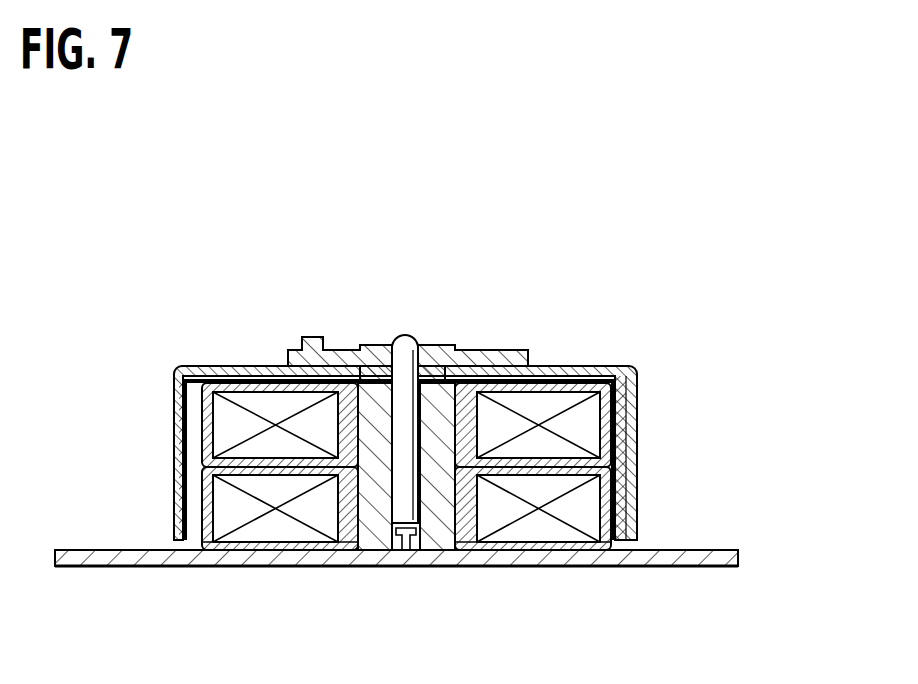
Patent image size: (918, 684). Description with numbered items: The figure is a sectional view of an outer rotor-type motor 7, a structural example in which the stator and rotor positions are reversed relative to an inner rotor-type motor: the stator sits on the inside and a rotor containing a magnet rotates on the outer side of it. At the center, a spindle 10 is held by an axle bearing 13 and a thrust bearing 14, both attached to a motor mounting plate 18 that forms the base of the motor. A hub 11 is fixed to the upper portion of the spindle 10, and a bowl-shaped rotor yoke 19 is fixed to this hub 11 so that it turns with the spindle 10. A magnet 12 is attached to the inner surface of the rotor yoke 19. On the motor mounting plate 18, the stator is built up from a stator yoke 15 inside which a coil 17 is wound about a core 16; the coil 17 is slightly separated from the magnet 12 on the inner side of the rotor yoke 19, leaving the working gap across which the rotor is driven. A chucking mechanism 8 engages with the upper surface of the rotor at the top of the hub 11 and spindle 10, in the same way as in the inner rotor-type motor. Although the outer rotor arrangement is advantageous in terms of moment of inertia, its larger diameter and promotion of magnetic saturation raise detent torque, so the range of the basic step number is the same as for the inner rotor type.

The spindle motor 7 is at (628, 294).
The chucking mechanism 8 is at (530, 277).
The spindle 10 is at (412, 338).
The hub 11 is at (372, 355).
The magnet 12 is at (190, 367).
The axle bearing 13 is at (376, 510).
The thrust bearing 14 is at (423, 533).
The stator yoke 15 is at (560, 547).
The core 16 is at (347, 530).
The coil 17 is at (270, 530).
The motor mounting plate 18 is at (663, 562).
The rotor yoke 19 is at (227, 368).